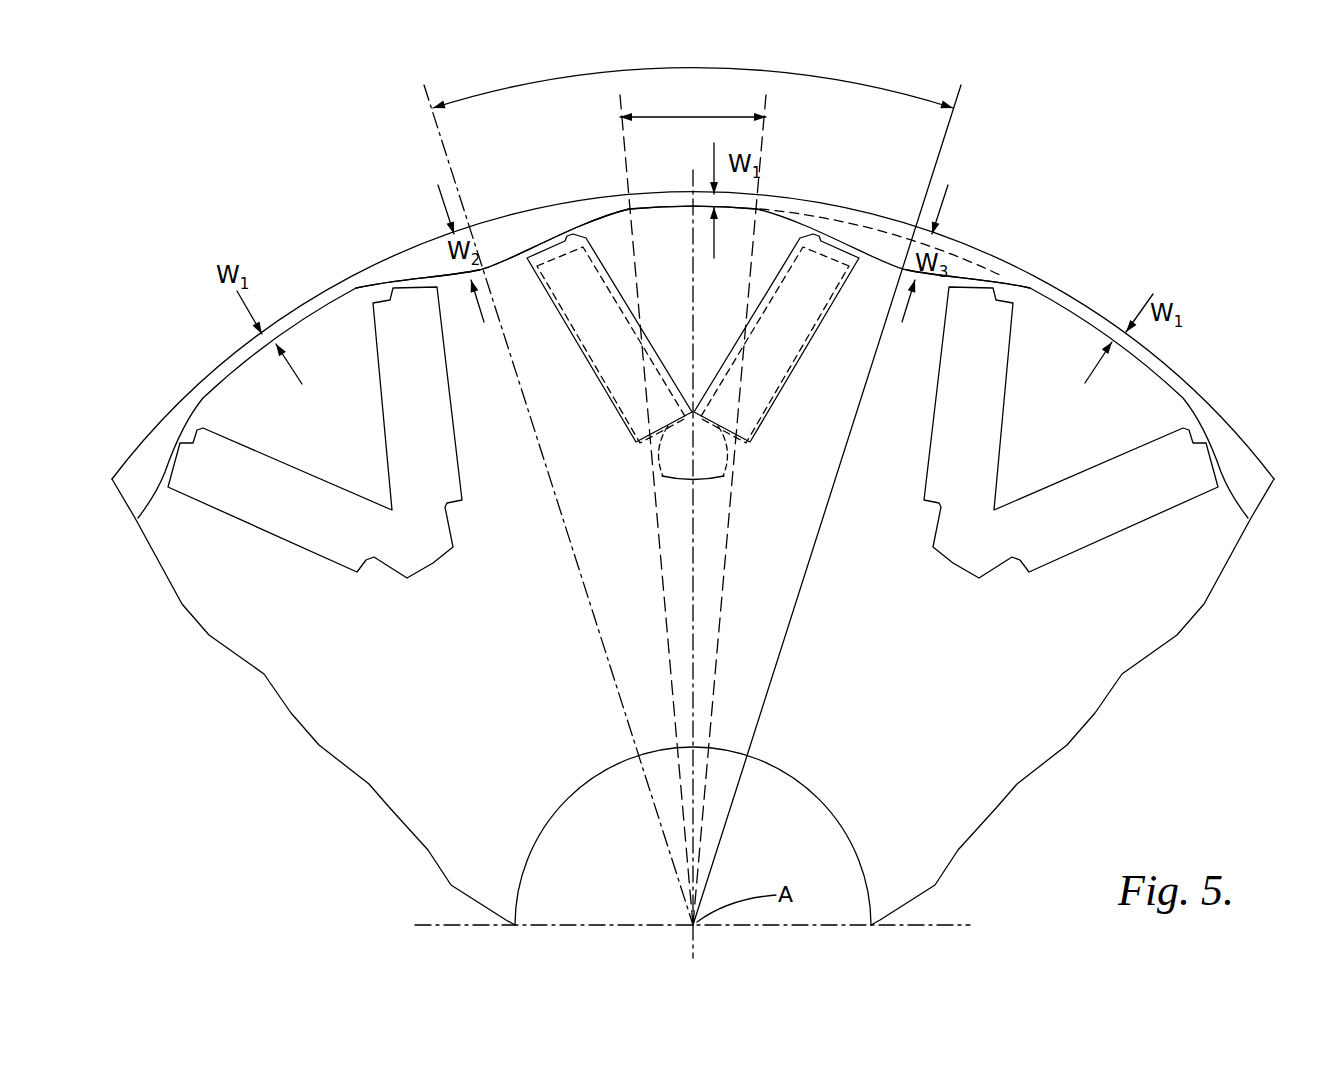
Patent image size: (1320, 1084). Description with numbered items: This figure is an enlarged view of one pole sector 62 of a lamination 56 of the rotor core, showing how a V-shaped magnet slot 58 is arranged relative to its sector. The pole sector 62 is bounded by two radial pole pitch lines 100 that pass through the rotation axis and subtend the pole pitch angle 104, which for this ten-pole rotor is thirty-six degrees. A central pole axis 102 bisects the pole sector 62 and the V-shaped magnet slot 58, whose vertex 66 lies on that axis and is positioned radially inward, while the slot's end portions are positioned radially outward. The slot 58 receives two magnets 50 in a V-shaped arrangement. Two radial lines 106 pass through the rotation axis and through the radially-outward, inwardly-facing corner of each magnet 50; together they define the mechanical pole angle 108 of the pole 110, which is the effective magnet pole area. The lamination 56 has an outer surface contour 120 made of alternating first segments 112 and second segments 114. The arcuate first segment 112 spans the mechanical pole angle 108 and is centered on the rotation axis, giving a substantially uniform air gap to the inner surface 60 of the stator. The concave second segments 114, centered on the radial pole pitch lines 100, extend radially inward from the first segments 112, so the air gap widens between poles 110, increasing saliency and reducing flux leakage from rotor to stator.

The magnet 50 is at (652, 476).
The lamination 56 is at (1095, 714).
The V-shaped magnet slot 58 is at (1160, 446).
The inner surface of the stator assembly 60 is at (1050, 288).
The pole sector 62 is at (356, 688).
The vertex 66 is at (700, 486).
The radial pole pitch line 100 is at (445, 158).
The central pole axis 102 is at (693, 170).
The pole pitch angle 104 is at (870, 82).
The radial line 106 is at (617, 110).
The mechanical pole angle 108 is at (673, 112).
The pole 110 is at (668, 224).
The first segment 112 is at (640, 207).
The second segment 114 is at (507, 259).
The outer surface contour 120 is at (1088, 320).